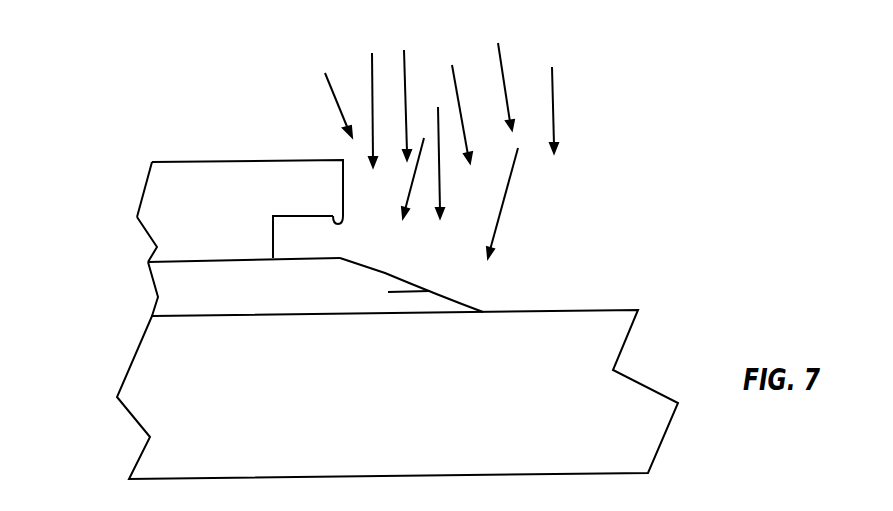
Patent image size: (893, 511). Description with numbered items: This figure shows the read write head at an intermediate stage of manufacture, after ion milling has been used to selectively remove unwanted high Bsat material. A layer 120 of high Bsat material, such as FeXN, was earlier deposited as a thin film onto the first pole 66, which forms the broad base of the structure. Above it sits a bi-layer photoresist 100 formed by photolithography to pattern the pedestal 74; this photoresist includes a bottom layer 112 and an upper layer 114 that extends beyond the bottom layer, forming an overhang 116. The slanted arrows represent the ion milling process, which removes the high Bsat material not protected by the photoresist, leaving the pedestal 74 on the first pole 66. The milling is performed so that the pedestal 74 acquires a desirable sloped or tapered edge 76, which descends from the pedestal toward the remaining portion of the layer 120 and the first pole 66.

The bi-layer photoresist 100 is at (180, 162).
The upper layer 114 is at (172, 187).
The bottom layer 112 is at (173, 233).
The overhang 116 is at (334, 226).
The pedestal 74 is at (173, 292).
The sloped or tapered edge 76 is at (393, 268).
The layer of high Bsat material 120 is at (423, 290).
The first pole 66 is at (150, 373).